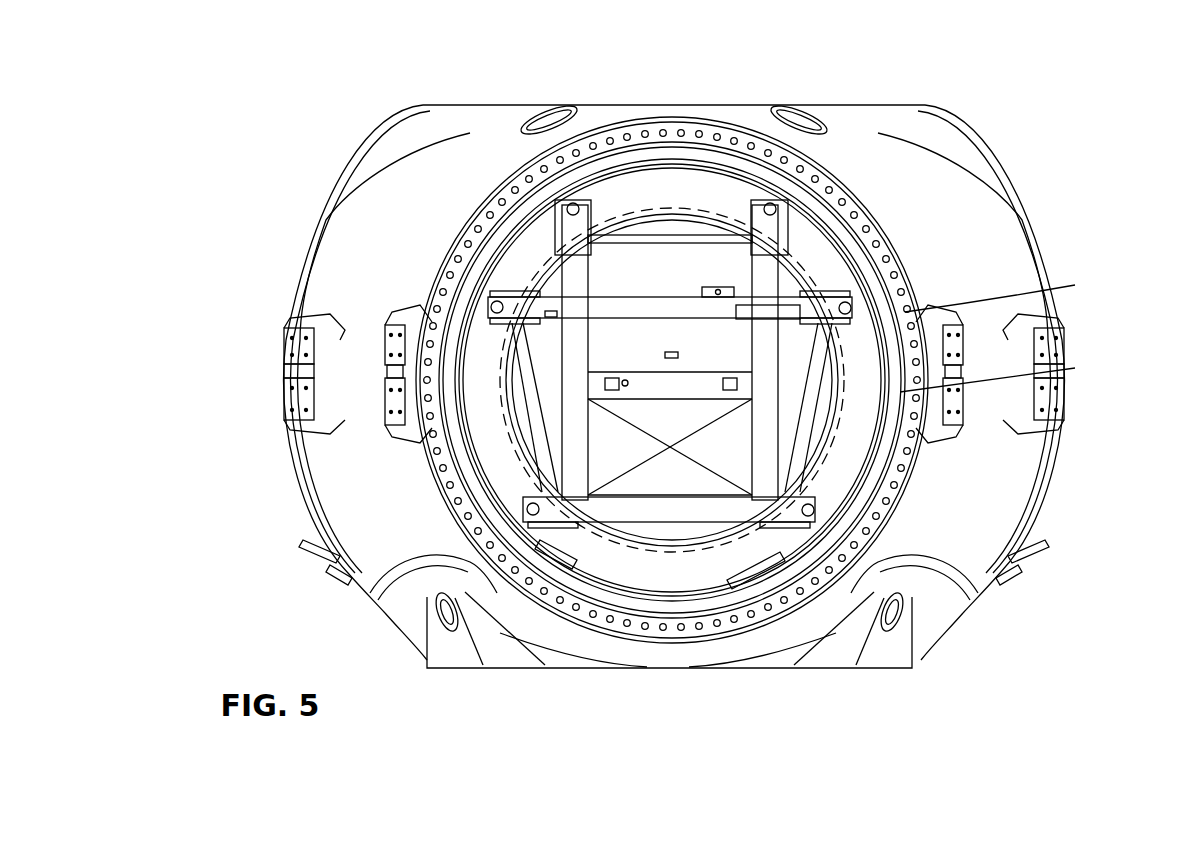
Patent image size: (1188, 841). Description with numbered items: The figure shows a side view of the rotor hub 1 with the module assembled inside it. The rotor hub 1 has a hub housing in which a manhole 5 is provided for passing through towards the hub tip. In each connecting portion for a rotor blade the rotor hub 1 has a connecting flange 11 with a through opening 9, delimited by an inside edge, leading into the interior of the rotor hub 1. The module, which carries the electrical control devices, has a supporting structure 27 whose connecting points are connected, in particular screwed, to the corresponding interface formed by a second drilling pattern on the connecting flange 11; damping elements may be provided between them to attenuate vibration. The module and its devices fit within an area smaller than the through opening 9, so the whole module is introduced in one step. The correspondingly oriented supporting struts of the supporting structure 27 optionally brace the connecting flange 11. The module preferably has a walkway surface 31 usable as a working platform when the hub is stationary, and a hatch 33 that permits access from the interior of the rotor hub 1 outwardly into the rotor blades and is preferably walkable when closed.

The rotor hub 1 is at (475, 140).
The manhole 5 is at (643, 88).
The through opening 9 is at (531, 263).
The connecting flange 11 is at (480, 437).
The supporting structure 27 is at (770, 415).
The walkway surface 31 is at (795, 392).
The hatch 33 is at (670, 478).